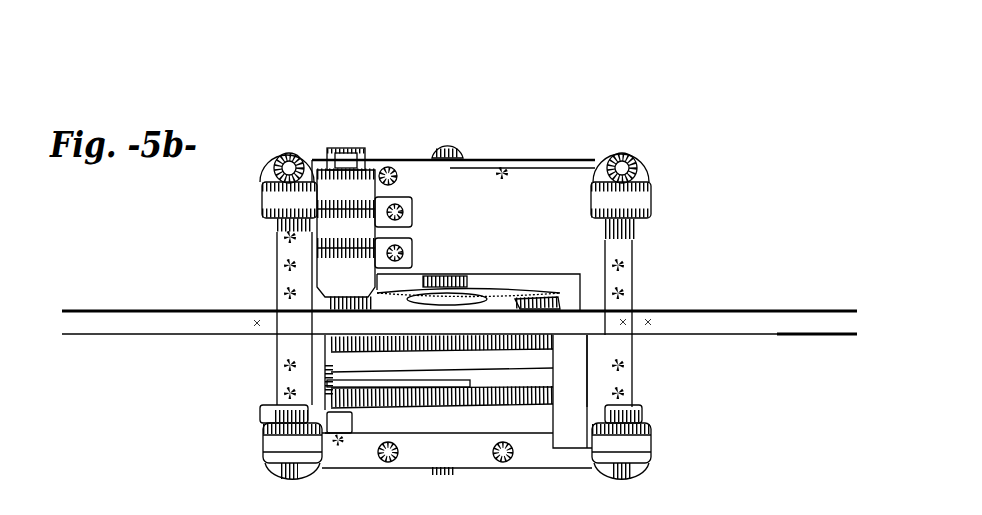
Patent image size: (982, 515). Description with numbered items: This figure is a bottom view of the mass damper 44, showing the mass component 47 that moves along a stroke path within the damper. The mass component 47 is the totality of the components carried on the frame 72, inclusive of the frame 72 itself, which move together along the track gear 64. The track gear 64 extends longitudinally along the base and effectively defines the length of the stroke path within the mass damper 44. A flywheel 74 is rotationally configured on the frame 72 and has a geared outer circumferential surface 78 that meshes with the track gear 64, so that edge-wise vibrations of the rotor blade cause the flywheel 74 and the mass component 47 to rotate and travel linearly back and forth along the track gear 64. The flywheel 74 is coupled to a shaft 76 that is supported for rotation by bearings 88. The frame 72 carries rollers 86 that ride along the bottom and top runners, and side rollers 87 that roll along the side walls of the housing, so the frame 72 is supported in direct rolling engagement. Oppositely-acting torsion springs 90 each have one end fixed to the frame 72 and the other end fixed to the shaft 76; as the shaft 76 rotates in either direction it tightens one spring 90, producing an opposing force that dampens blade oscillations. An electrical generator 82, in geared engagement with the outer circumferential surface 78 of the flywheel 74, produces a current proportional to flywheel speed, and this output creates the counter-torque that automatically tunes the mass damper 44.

The mass damper 44 is at (763, 102).
The mass component 47 is at (204, 243).
The track gear 64 is at (210, 312).
The frame 72 is at (490, 247).
The flywheel 74 is at (512, 296).
The shaft 76 is at (447, 148).
The geared outer circumferential surface 78 is at (557, 305).
The electrical generator 82 is at (322, 255).
The rollers 86 is at (262, 203).
The side rollers 87 is at (600, 147).
The bearings 88 is at (263, 442).
The torsion springs 90 is at (537, 358).